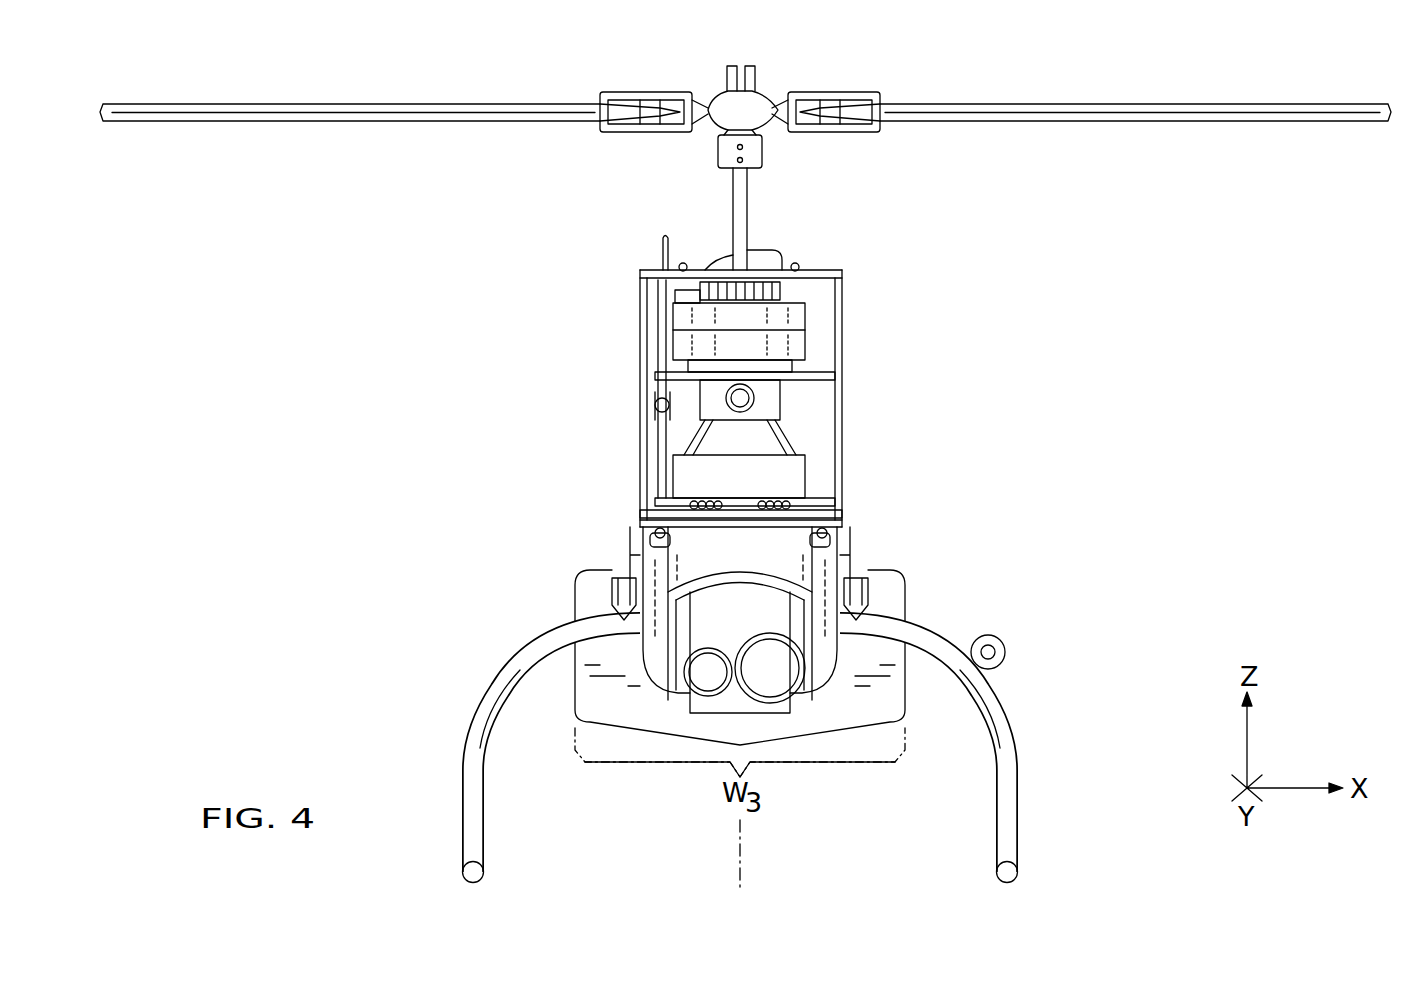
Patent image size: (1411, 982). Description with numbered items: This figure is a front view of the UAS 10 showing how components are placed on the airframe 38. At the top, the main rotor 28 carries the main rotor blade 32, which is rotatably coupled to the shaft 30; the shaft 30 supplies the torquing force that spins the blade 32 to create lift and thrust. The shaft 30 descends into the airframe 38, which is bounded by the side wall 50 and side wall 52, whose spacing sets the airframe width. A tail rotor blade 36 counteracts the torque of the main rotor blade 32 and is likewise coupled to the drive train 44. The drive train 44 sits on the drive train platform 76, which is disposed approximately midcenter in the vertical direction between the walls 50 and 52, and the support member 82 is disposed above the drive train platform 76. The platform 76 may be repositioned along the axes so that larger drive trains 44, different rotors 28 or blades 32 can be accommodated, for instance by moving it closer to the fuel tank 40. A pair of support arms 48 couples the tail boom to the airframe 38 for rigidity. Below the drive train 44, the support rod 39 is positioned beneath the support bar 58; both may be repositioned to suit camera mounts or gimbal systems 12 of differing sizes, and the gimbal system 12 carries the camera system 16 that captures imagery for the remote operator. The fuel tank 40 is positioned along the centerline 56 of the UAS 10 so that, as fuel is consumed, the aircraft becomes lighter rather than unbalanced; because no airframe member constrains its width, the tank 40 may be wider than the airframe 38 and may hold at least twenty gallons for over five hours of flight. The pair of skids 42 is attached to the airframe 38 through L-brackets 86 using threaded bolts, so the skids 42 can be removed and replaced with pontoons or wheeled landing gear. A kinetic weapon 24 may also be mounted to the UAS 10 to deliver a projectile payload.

The UAS 10 is at (1180, 88).
The gimbal system 12 is at (753, 493).
The camera system 16 is at (765, 660).
The kinetic weapon 24 is at (1003, 642).
The main rotor 28 is at (770, 86).
The shaft 30 is at (750, 183).
The main rotor blade 32 is at (338, 124).
The tail rotor blade 36 is at (660, 262).
The airframe 38 is at (872, 308).
The support rod 39 is at (832, 518).
The fuel tank 40 is at (905, 600).
The skids 42 is at (462, 823).
The drive train 44 is at (815, 342).
The support arms 48 is at (778, 448).
The side wall 50 is at (640, 402).
The side wall 52 is at (845, 441).
The centerline 56 is at (742, 864).
The support bar 58 is at (820, 493).
The drive train platform 76 is at (822, 382).
The support member 82 is at (800, 270).
The L-brackets 86 is at (630, 572).